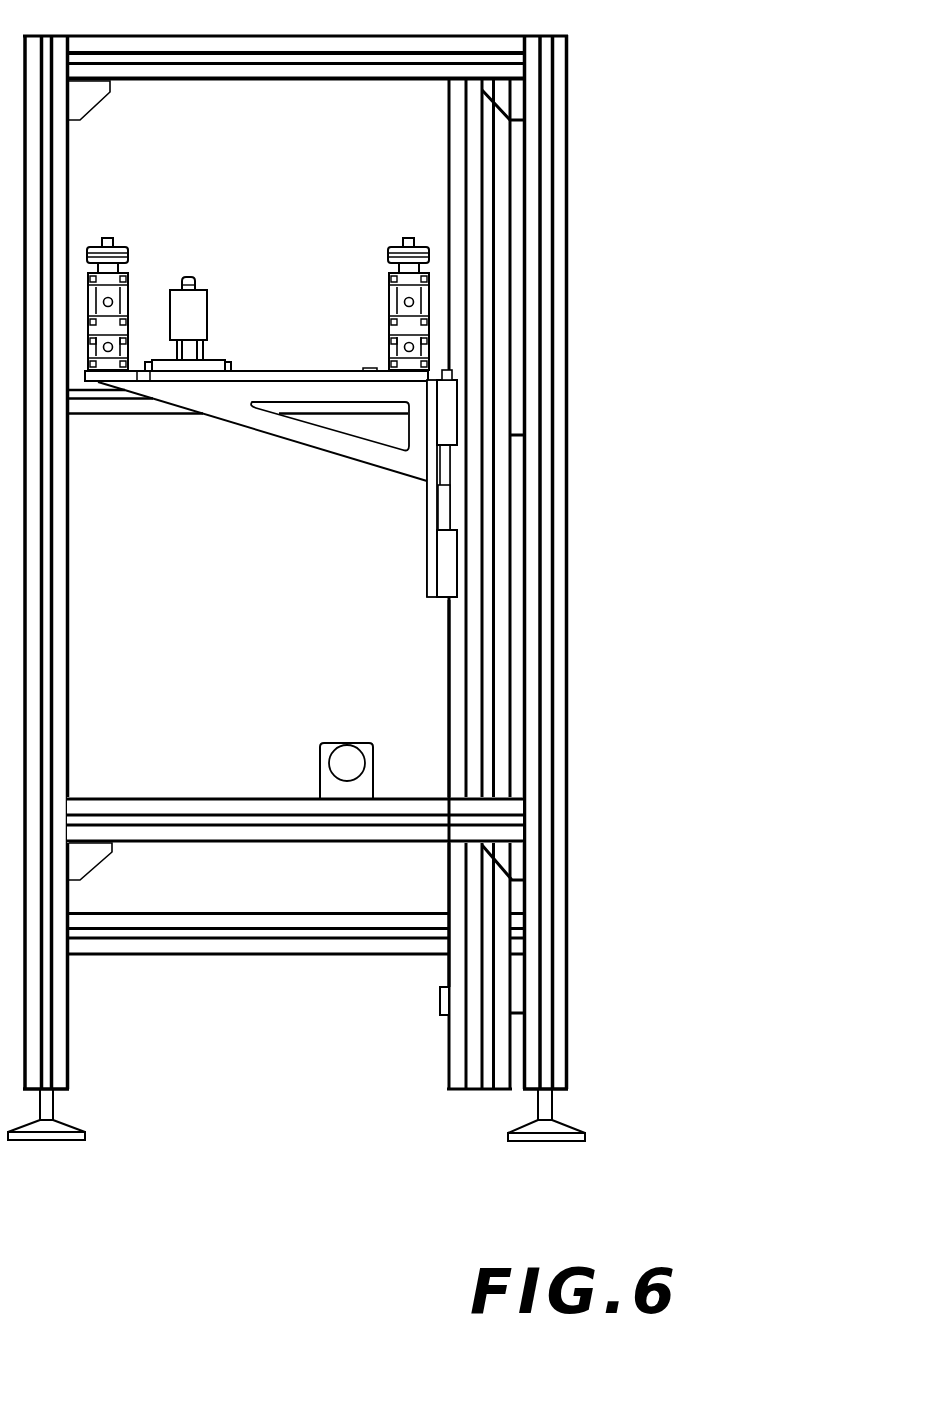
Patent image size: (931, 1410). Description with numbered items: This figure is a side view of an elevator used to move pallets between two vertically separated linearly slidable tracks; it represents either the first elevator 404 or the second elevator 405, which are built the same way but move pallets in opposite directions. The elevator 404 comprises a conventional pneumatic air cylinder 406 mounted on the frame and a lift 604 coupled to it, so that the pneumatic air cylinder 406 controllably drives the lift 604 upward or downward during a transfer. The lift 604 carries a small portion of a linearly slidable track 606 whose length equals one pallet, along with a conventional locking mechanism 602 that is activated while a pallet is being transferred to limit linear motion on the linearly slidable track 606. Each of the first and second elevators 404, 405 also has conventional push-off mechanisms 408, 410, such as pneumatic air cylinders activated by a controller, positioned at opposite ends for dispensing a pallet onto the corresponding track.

The first elevator 404 is at (377, 637).
The second elevator 405 is at (746, 1240).
The pneumatic air cylinder 406 is at (447, 640).
The push-off mechanism 408 is at (345, 729).
The push-off mechanism 410 is at (343, 760).
The locking mechanism 602 is at (200, 310).
The lift 604 is at (427, 507).
The linearly slidable track 606 is at (132, 285).